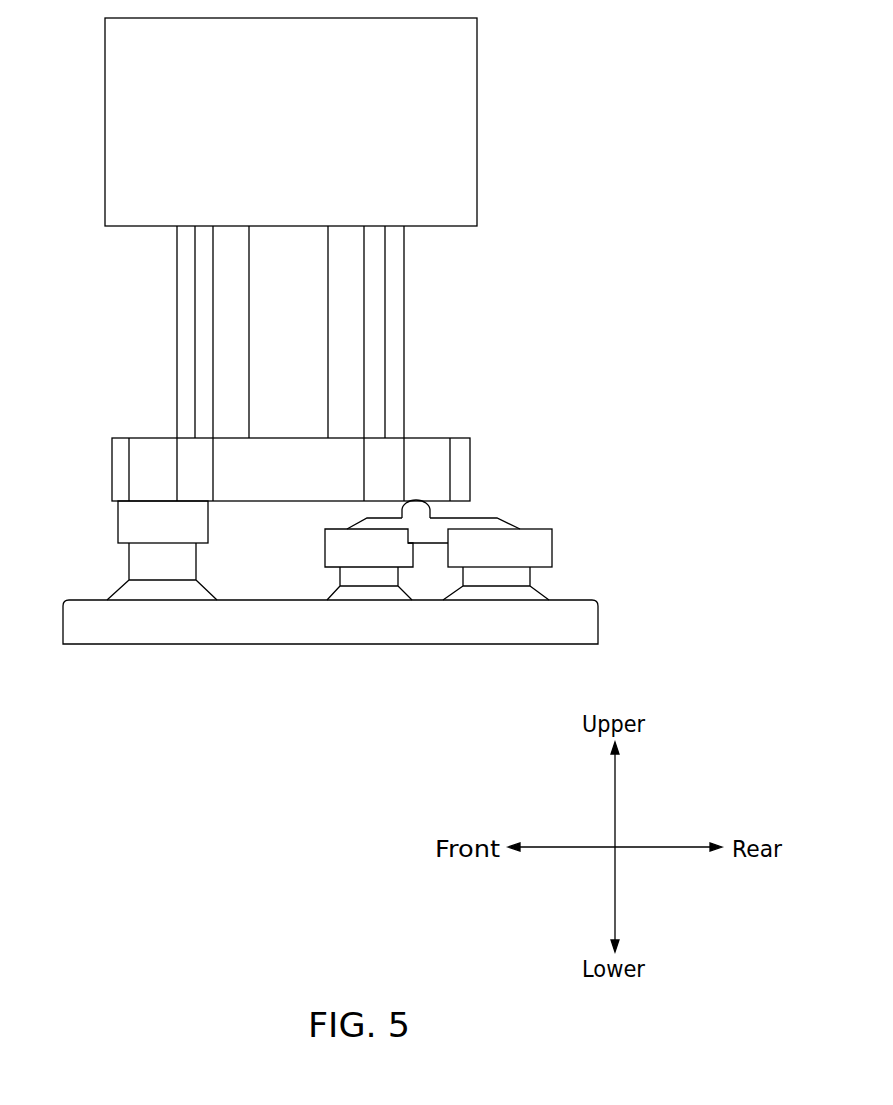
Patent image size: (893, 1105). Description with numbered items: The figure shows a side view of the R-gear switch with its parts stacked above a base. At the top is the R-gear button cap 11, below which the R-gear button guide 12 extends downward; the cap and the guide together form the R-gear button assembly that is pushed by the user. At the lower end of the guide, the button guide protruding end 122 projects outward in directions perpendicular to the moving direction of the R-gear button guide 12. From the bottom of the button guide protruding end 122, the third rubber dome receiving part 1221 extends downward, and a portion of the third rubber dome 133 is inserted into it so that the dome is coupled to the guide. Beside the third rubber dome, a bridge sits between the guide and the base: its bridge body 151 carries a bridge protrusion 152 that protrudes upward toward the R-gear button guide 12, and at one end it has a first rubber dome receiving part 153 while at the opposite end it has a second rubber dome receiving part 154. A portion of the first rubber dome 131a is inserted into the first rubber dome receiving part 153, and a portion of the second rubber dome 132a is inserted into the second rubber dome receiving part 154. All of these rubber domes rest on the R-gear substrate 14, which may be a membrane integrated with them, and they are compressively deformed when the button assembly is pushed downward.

The R-gear button cap 11 is at (468, 125).
The R-gear button guide 12 is at (420, 332).
The button guide protruding end 122 is at (462, 448).
The third rubber dome receiving part 1221 is at (130, 523).
The third rubber dome 133 is at (140, 558).
The R-gear substrate 14 is at (590, 620).
The bridge body 151 is at (525, 517).
The bridge protrusion 152 is at (440, 512).
The first rubber dome receiving part 153 is at (333, 551).
The second rubber dome receiving part 154 is at (548, 545).
The first rubber dome 131a is at (367, 580).
The second rubber dome 132a is at (498, 593).